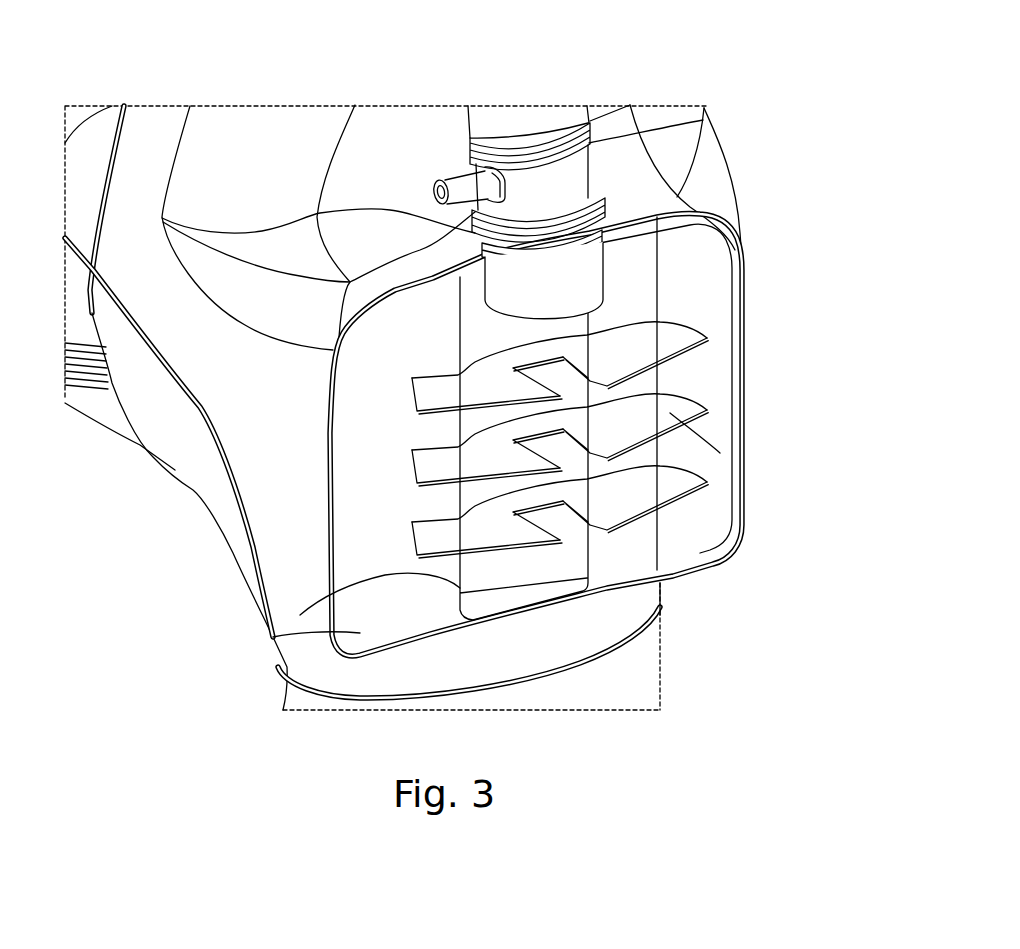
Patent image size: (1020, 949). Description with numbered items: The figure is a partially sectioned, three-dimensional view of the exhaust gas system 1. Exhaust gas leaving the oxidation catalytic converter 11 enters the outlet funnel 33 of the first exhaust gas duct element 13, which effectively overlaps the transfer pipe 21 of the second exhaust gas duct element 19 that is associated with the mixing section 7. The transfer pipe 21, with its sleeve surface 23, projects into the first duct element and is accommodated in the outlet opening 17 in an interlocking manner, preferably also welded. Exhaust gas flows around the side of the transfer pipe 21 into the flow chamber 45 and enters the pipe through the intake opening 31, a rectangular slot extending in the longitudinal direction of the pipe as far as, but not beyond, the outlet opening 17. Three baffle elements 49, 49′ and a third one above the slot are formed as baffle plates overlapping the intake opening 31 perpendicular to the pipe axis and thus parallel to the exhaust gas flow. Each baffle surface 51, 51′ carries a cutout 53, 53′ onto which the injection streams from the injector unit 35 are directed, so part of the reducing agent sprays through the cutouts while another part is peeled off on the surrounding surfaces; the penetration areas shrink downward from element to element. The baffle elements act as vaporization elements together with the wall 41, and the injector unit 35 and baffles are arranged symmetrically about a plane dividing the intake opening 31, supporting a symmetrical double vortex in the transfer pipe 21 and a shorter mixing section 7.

The exhaust gas system 1 is at (505, 68).
The mixing section 7 is at (688, 705).
The oxidation catalytic converter 11 is at (93, 407).
The first exhaust gas duct element 13 is at (709, 105).
The outlet opening 17 is at (667, 580).
The second exhaust gas duct element 19 is at (672, 687).
The transfer pipe 21 is at (665, 291).
The sleeve surface 23 is at (355, 478).
The intake opening 31 is at (285, 632).
The outlet funnel 33 is at (703, 120).
The injector unit 35 is at (570, 106).
The wall 41 is at (608, 242).
The flow chamber 45 is at (730, 380).
The baffle element 49 is at (672, 338).
The baffle surface 51 is at (708, 338).
The cutout 53 is at (703, 392).
The baffle element 49′ is at (703, 410).
The baffle surface 51′ is at (704, 483).
The cutout 53′ is at (720, 470).